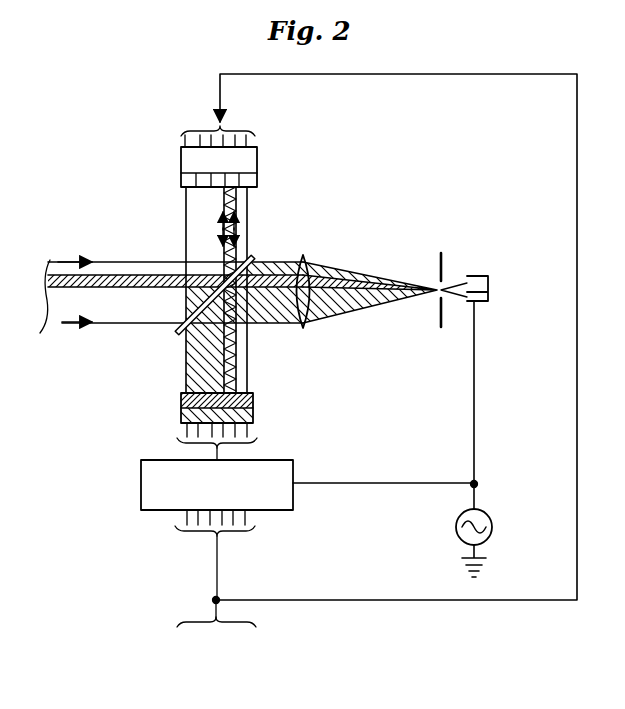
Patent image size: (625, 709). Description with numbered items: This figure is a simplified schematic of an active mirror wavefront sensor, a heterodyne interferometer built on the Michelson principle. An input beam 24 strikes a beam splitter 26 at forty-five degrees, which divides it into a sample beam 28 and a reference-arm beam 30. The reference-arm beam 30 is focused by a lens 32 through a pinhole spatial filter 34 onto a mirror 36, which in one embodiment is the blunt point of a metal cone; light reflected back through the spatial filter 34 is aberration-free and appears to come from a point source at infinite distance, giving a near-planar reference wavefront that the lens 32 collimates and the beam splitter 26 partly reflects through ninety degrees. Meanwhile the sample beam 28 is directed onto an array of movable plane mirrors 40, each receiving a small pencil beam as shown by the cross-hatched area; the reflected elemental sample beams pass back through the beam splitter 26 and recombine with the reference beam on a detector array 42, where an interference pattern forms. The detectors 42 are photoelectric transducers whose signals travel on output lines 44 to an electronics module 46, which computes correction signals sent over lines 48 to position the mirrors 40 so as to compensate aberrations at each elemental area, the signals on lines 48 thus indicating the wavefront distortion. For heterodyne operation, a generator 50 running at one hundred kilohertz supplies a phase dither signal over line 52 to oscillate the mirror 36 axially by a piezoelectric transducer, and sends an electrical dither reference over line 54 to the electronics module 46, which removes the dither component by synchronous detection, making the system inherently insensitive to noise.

The input beam 24 is at (136, 305).
The beam splitter 26 is at (176, 335).
The sample beam 28 is at (247, 210).
The reference-arm beam 30 is at (301, 260).
The lens 32 is at (302, 328).
The pinhole spatial filter 34 is at (441, 256).
The mirror 36 is at (457, 272).
The array of movable plane mirrors 40 is at (181, 179).
The detector array 42 is at (181, 403).
The output lines 44 is at (212, 452).
The electronics module 46 is at (140, 505).
The lines 48 is at (330, 600).
The generator 50 is at (488, 515).
The line 52 is at (474, 372).
The line 54 is at (358, 483).